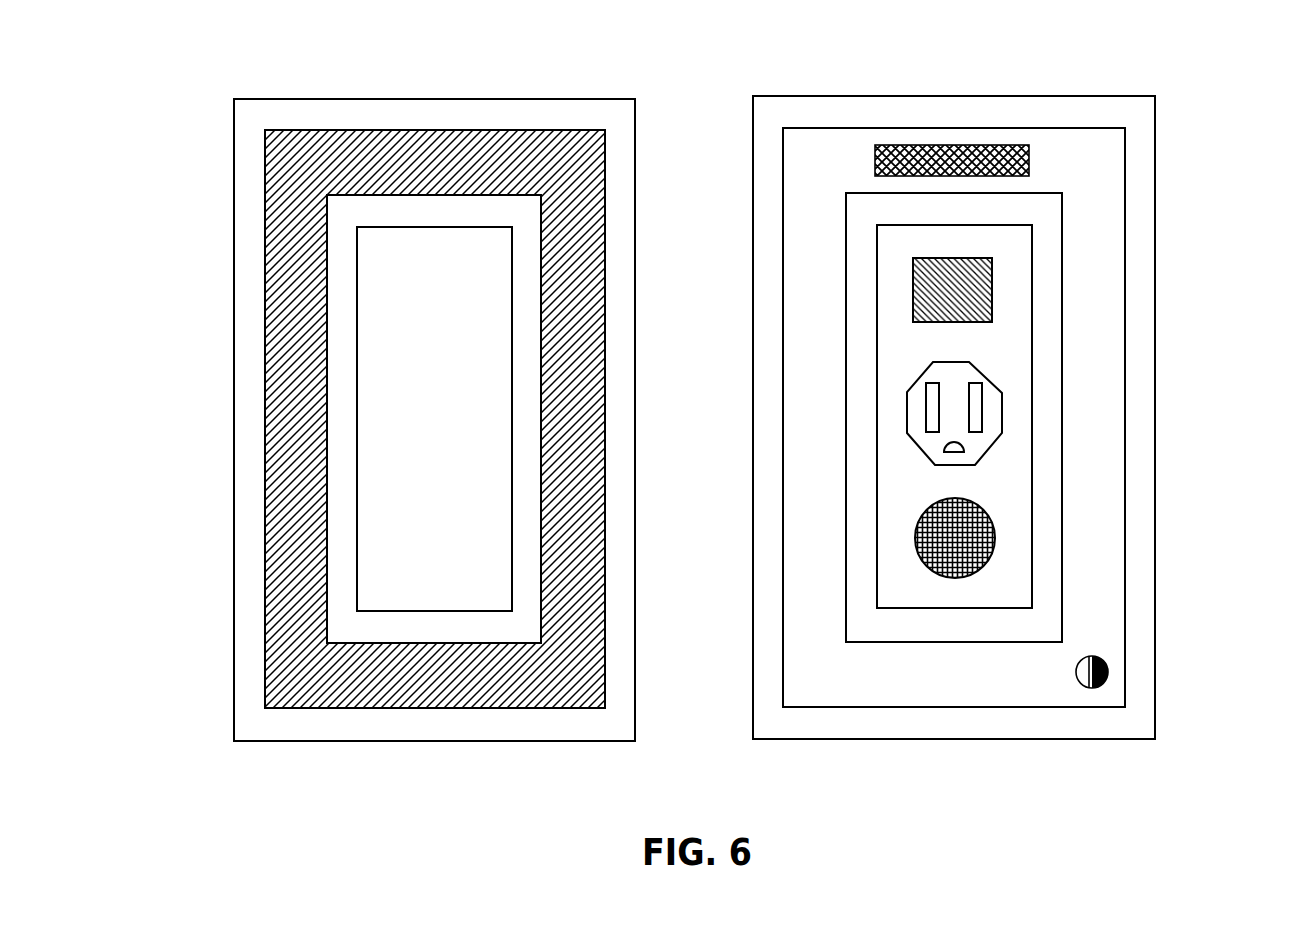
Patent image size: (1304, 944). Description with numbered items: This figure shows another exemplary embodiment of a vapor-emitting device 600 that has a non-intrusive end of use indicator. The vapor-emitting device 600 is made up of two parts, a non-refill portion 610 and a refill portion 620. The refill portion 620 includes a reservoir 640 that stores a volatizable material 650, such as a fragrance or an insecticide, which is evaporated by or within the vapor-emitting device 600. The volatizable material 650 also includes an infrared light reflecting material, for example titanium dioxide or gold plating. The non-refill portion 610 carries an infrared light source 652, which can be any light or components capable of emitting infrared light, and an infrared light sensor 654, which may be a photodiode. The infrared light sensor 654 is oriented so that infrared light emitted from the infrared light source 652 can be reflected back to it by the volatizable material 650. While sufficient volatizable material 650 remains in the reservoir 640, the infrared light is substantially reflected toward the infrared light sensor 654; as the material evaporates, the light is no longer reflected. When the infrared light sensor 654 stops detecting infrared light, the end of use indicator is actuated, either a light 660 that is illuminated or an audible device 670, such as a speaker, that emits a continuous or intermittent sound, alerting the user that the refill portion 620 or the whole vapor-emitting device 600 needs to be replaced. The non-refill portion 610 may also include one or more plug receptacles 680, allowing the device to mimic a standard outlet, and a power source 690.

The vapor-emitting device 600 is at (199, 99).
The non-refill portion 610 is at (942, 93).
The refill portion 620 is at (423, 99).
The reservoir 640 is at (265, 308).
The volatizable material 650 is at (290, 418).
The infrared light source 652 is at (1108, 670).
The infrared light sensor 654 is at (1089, 672).
The light 660 is at (992, 282).
The audible device 670 is at (995, 521).
The plug receptacle 680 is at (1002, 410).
The power source 690 is at (922, 158).